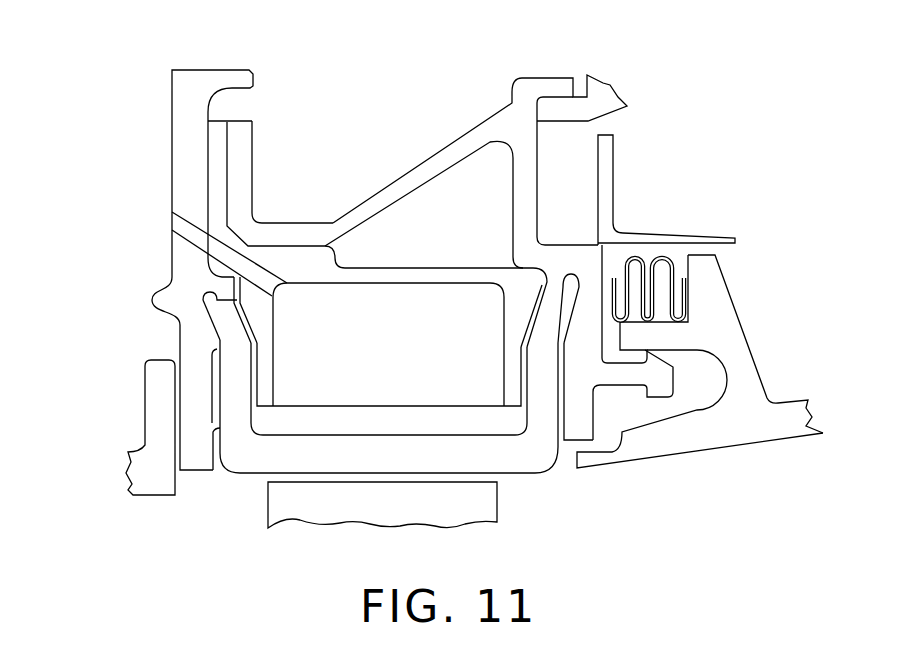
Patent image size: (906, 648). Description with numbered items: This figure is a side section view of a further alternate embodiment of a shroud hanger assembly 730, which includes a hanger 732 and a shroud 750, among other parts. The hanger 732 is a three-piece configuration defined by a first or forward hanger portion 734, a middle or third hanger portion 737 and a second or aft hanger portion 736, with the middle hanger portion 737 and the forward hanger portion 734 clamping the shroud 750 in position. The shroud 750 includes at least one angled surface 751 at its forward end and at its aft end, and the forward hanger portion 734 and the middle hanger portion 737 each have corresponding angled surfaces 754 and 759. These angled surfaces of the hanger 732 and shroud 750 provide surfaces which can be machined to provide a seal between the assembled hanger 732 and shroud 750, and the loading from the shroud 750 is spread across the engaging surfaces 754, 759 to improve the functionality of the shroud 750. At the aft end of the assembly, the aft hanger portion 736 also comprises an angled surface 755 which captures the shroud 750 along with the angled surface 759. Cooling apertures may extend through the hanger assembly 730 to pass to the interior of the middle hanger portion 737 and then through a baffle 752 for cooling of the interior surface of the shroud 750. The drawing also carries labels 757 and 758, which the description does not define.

The shroud hanger assembly 730 is at (673, 55).
The hanger 732 is at (418, 86).
The forward hanger portion 734 is at (162, 122).
The aft hanger portion 736 is at (255, 152).
The middle hanger portion 737 is at (222, 125).
The shroud 750 is at (512, 490).
The angled surface 751 is at (236, 375).
The baffle 752 is at (344, 398).
The angled surface 754 is at (192, 323).
The angled surface 755 is at (585, 300).
The outer shell 757 is at (243, 410).
The bracket 758 is at (533, 415).
The angled surface 759 is at (262, 304).